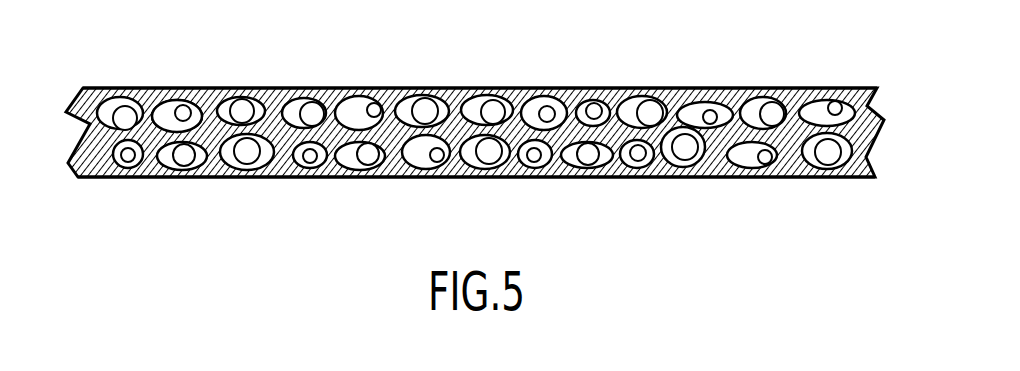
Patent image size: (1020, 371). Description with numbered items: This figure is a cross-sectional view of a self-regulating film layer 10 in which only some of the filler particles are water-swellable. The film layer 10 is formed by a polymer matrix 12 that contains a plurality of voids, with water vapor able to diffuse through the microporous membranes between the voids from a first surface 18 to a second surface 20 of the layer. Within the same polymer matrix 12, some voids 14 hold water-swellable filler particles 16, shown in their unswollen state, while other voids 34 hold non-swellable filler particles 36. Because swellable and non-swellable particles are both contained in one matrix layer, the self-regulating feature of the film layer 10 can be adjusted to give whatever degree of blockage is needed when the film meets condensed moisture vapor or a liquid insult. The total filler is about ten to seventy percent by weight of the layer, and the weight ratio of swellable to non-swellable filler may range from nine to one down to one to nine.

The self-regulating film layer 10 is at (489, 135).
The polymer matrix 12 is at (808, 88).
The voids 14 is at (568, 164).
The water-swellable filler particles 16 is at (612, 164).
The first surface 18 is at (348, 88).
The second surface 20 is at (265, 178).
The voids 34 is at (170, 104).
The non-swellable filler particles 36 is at (193, 109).